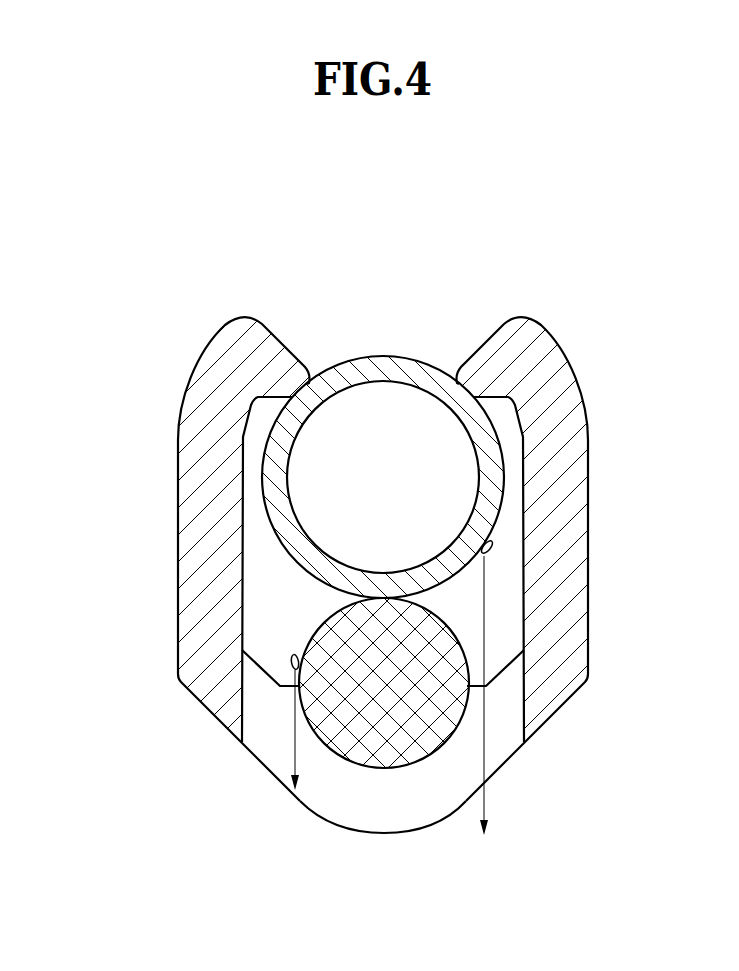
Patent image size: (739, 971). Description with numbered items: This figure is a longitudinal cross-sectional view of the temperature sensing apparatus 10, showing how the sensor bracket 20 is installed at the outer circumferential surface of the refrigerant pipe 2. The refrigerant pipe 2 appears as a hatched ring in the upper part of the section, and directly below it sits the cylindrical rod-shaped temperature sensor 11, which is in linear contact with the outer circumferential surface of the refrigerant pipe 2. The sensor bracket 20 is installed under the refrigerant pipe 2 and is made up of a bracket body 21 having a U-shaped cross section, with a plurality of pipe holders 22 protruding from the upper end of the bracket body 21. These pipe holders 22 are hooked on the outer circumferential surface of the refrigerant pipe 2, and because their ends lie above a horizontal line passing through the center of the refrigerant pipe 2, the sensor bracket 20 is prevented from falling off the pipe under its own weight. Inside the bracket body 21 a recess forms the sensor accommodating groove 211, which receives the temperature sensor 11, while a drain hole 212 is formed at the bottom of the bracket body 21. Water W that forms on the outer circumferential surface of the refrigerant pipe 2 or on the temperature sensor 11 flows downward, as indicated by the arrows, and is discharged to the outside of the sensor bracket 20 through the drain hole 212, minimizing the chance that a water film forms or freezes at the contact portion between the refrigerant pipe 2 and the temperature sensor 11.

The temperature sensing apparatus 10 is at (167, 221).
The sensor bracket 20 is at (158, 378).
The refrigerant pipe 2 is at (386, 365).
The pipe holder 22 is at (528, 330).
The bracket body 21 is at (558, 702).
The drain hole 212 is at (267, 760).
The sensor accommodating groove 211 is at (360, 768).
The temperature sensor 11 is at (438, 740).
The water W is at (291, 661).